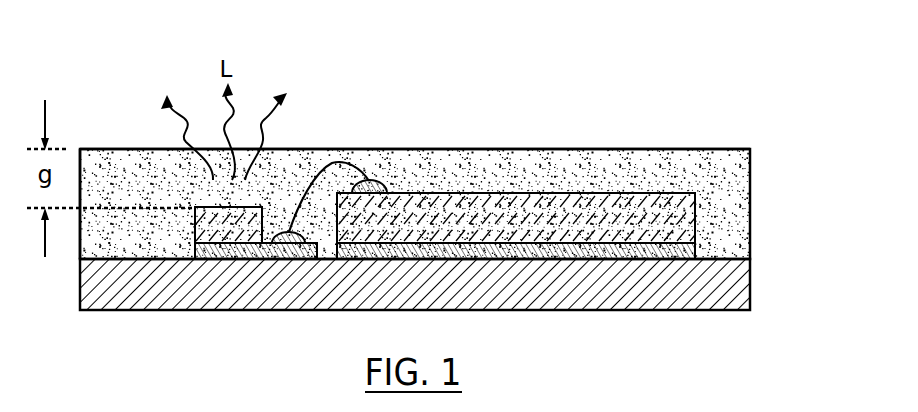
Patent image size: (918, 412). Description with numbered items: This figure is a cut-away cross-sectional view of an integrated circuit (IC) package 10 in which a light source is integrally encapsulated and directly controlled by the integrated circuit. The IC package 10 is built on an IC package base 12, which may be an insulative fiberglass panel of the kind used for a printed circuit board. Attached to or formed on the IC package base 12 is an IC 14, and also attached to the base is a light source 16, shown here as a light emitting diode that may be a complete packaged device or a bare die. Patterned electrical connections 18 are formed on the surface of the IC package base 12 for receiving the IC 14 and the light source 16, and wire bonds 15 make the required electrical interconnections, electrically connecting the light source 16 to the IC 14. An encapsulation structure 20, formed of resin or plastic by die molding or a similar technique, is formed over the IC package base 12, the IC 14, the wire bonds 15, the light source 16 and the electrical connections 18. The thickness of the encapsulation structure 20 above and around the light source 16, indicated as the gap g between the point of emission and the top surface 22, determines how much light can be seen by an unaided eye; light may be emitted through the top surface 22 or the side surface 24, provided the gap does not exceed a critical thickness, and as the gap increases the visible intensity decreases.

The integrated circuit (IC) package 10 is at (422, 175).
The IC package base 12 is at (750, 284).
The IC 14 is at (695, 226).
The wire bonds 15 is at (333, 162).
The light source 16 is at (207, 246).
The electrical connections 18 is at (282, 250).
The encapsulation structure 20 is at (750, 170).
The top surface 22 is at (718, 149).
The side surface 24 is at (80, 243).